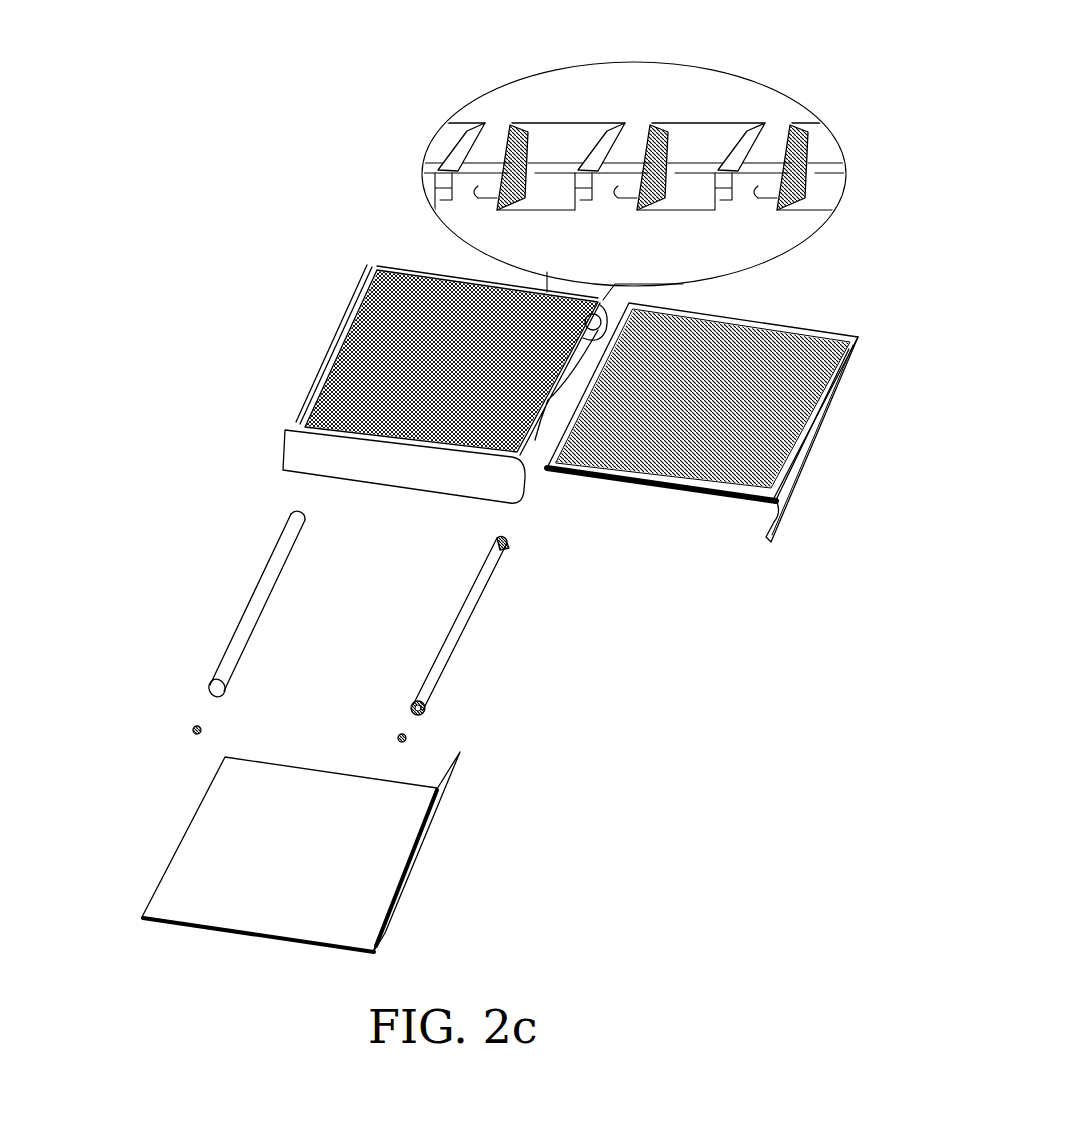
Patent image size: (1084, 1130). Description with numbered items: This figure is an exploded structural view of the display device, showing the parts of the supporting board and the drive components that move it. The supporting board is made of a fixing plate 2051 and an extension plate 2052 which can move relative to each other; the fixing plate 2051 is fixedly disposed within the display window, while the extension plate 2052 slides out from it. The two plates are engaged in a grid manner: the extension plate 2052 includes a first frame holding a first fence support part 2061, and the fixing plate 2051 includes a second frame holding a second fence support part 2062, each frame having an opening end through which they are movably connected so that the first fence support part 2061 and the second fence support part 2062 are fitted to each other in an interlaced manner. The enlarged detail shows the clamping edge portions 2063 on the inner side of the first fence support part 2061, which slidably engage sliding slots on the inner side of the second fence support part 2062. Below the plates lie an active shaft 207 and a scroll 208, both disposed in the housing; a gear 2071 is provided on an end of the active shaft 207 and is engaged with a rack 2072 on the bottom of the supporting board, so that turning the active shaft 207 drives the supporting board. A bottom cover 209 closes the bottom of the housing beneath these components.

The fixing plate 2051 is at (374, 280).
The first fence support part 2061 is at (346, 332).
The extension plate 2052 is at (764, 325).
The second fence support part 2062 is at (826, 387).
The clamping edge portions 2063 is at (543, 182).
The rack 2072 is at (708, 493).
The active shaft 207 is at (468, 616).
The gear 2071 is at (426, 704).
The scroll 208 is at (270, 594).
The bottom cover 209 is at (222, 848).